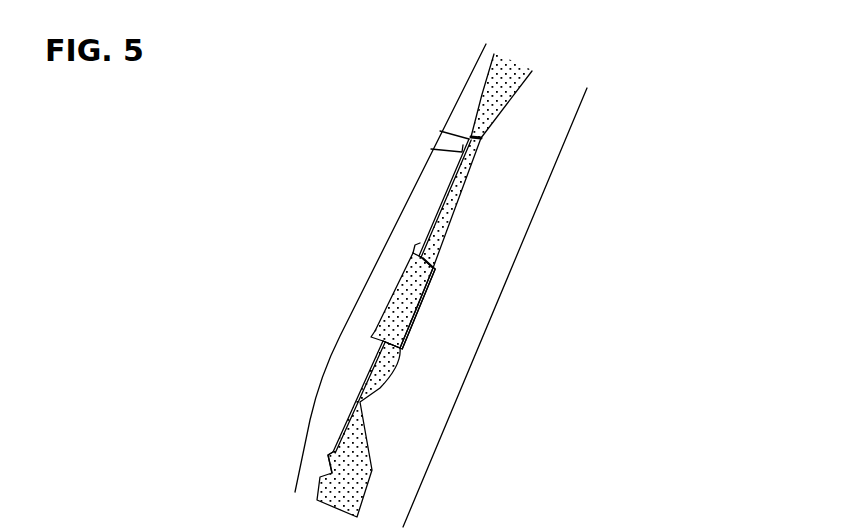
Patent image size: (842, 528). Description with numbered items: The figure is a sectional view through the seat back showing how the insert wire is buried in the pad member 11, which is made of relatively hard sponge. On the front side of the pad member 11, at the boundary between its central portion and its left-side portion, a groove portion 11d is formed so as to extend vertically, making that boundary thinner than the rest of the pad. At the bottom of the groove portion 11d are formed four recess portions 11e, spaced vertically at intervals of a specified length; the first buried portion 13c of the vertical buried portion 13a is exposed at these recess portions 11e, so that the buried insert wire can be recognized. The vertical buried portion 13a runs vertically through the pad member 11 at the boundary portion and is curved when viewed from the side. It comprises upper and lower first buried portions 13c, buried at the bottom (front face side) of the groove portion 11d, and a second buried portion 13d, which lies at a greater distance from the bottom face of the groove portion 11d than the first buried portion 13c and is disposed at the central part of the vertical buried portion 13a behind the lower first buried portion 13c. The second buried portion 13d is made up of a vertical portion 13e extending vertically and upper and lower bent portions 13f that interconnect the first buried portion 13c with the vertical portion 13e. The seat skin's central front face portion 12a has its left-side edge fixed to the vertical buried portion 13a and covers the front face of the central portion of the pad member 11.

The pad member 11 is at (518, 90).
The groove portion 11d is at (487, 98).
The recess portions 11e is at (465, 152).
The central front face portion 12a is at (440, 128).
The vertical buried portion 13a is at (484, 137).
The first buried portion 13c is at (455, 212).
The second buried portion 13d is at (568, 314).
The vertical portion 13e is at (430, 300).
The bent portions 13f is at (447, 265).